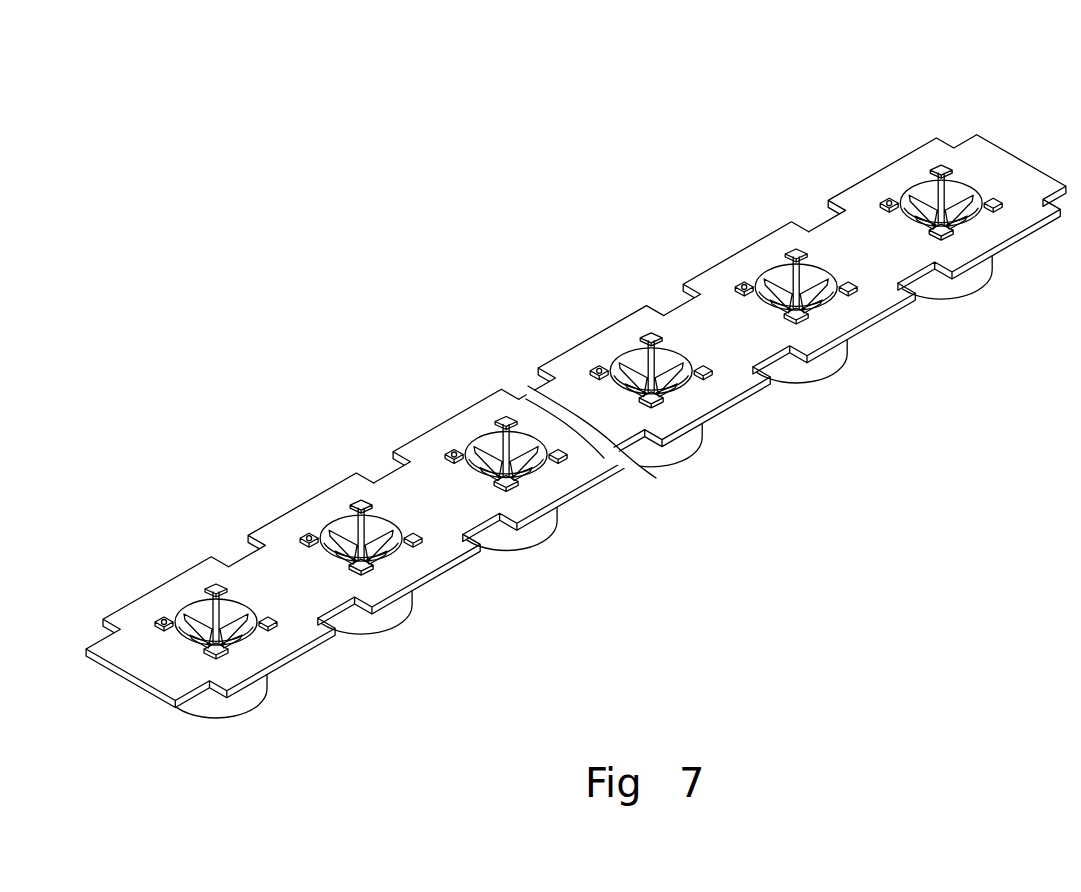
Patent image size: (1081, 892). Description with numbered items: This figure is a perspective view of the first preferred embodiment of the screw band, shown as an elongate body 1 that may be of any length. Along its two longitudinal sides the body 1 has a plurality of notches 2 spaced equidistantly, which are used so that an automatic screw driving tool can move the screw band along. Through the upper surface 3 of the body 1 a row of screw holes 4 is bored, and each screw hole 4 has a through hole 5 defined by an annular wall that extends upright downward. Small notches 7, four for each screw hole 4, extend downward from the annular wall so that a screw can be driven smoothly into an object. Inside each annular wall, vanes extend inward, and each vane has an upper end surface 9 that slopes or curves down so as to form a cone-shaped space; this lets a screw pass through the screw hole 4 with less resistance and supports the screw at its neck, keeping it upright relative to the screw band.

The body 1 is at (577, 407).
The notches 2 is at (233, 557).
The upper surface 3 is at (893, 158).
The screw holes 4 is at (241, 599).
The through hole 5 is at (227, 617).
The small notches 7 is at (216, 585).
The upper end surface 9 is at (162, 627).